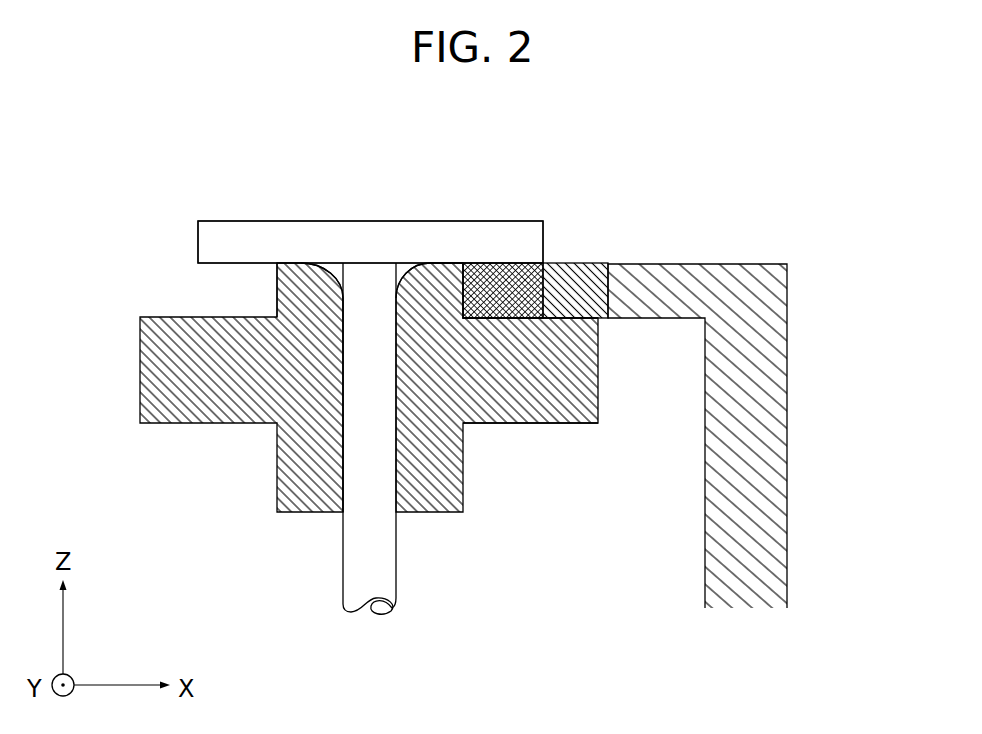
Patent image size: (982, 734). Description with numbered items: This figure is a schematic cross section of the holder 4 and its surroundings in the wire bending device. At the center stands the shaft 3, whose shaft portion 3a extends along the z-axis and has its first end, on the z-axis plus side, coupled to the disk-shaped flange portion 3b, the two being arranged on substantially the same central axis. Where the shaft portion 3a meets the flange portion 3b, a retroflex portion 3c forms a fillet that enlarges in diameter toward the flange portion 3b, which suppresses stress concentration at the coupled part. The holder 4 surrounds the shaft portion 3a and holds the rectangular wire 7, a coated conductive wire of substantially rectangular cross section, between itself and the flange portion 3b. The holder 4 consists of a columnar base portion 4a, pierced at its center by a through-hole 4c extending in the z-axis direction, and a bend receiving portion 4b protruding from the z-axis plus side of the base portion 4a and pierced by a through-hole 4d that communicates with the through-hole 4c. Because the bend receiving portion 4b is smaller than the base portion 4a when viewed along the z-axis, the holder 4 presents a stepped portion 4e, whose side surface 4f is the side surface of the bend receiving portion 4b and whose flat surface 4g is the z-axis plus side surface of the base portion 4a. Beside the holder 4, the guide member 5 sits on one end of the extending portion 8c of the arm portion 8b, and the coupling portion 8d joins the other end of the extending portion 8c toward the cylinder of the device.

The shaft 3 is at (386, 373).
The shaft portion 3a is at (383, 583).
The flange portion 3b is at (507, 230).
The retroflex portion 3c is at (333, 263).
The holder 4 is at (601, 436).
The base portion 4a is at (542, 438).
The bend receiving portion 4b is at (270, 298).
The through-hole 4c is at (343, 382).
The through-hole 4d is at (335, 289).
The stepped portion 4e is at (500, 332).
The side surface 4f is at (444, 263).
The flat surface 4g is at (527, 325).
The guide member 5 is at (582, 263).
The rectangular wire 7 is at (525, 265).
The arm portion 8b is at (752, 401).
The extending portion 8c is at (682, 283).
The coupling portion 8d is at (773, 485).